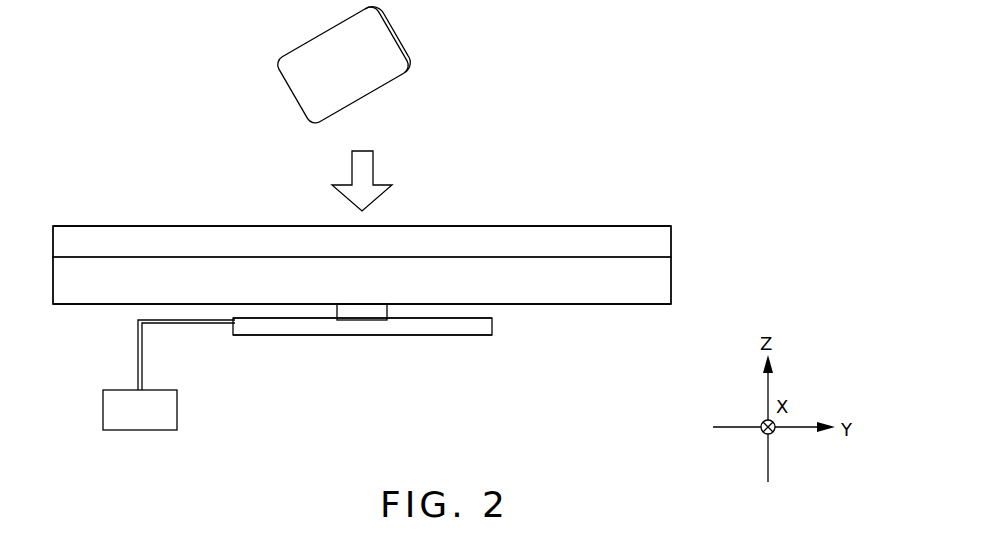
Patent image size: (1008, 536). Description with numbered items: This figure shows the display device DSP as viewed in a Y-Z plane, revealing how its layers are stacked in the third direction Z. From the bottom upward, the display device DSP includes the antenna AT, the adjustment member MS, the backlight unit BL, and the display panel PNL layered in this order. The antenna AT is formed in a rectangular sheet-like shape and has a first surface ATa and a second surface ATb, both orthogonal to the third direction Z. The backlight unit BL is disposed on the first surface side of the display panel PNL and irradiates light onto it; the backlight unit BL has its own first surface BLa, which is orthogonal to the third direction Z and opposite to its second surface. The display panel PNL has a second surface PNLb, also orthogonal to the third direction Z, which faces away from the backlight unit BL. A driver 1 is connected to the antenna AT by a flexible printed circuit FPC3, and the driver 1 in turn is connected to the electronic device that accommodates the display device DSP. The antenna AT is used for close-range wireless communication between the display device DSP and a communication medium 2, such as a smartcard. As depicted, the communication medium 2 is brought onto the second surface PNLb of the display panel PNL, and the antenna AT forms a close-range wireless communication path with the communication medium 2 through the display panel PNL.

The communication medium 2 is at (383, 45).
The display device DSP is at (611, 166).
The display panel PNL is at (664, 240).
The second surface PNLb is at (650, 217).
The backlight unit BL is at (664, 280).
The first surface BLa is at (647, 310).
The adjustment member MS is at (363, 318).
The antenna AT is at (492, 325).
The second surface ATb is at (484, 310).
The first surface ATa is at (440, 341).
The flexible printed circuit FPC3 is at (138, 357).
The driver 1 is at (177, 410).